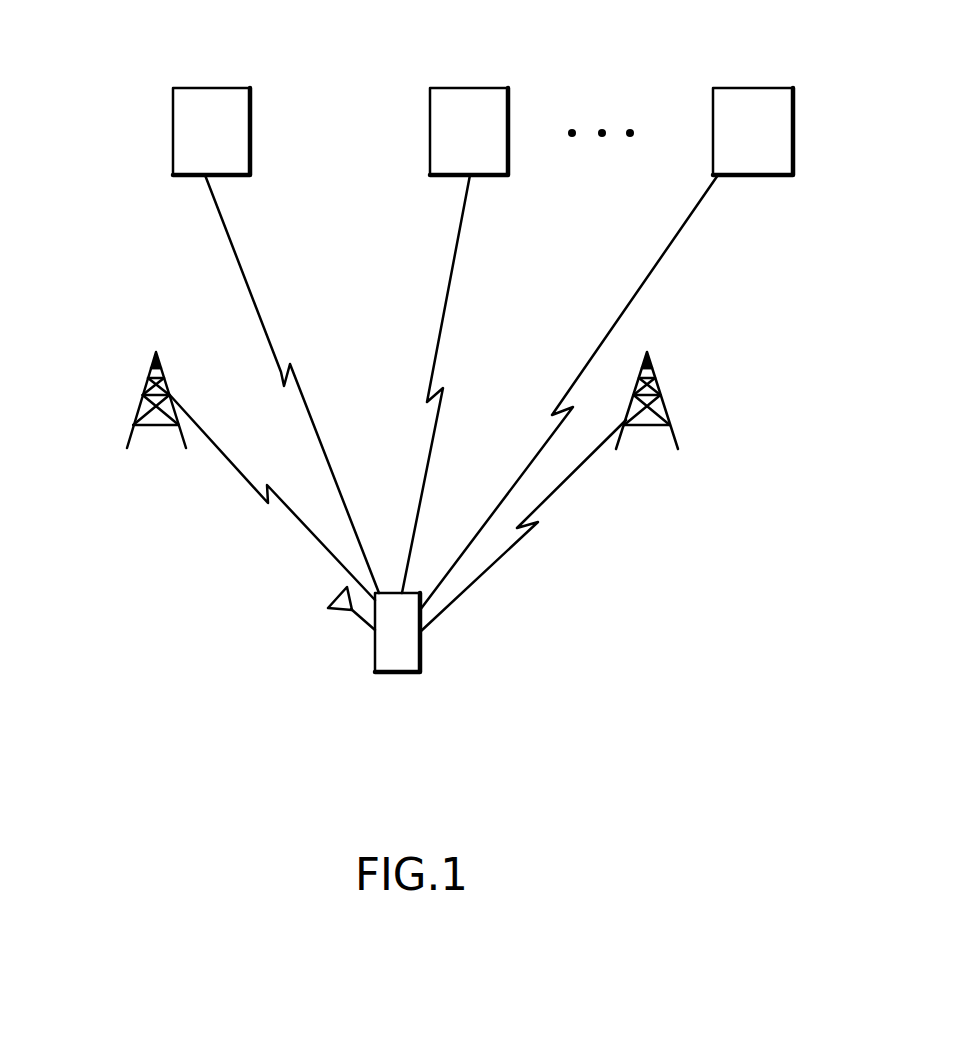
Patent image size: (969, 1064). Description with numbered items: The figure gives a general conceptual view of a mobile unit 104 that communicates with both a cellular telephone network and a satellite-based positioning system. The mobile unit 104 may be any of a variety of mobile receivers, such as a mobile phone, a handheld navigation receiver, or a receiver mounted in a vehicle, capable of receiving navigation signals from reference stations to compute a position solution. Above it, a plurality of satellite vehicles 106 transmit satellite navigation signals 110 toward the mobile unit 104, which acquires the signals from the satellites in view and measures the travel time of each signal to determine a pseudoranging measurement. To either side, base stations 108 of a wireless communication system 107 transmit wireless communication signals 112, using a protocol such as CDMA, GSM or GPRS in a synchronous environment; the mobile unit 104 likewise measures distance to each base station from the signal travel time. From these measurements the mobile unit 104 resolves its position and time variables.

The mobile unit 104 is at (420, 660).
The satellite vehicles 106 is at (223, 88).
The wireless communication system 107 is at (790, 344).
The base stations 108 is at (150, 374).
The satellite navigation signals 110 is at (268, 335).
The wireless communication signals 112 is at (252, 487).